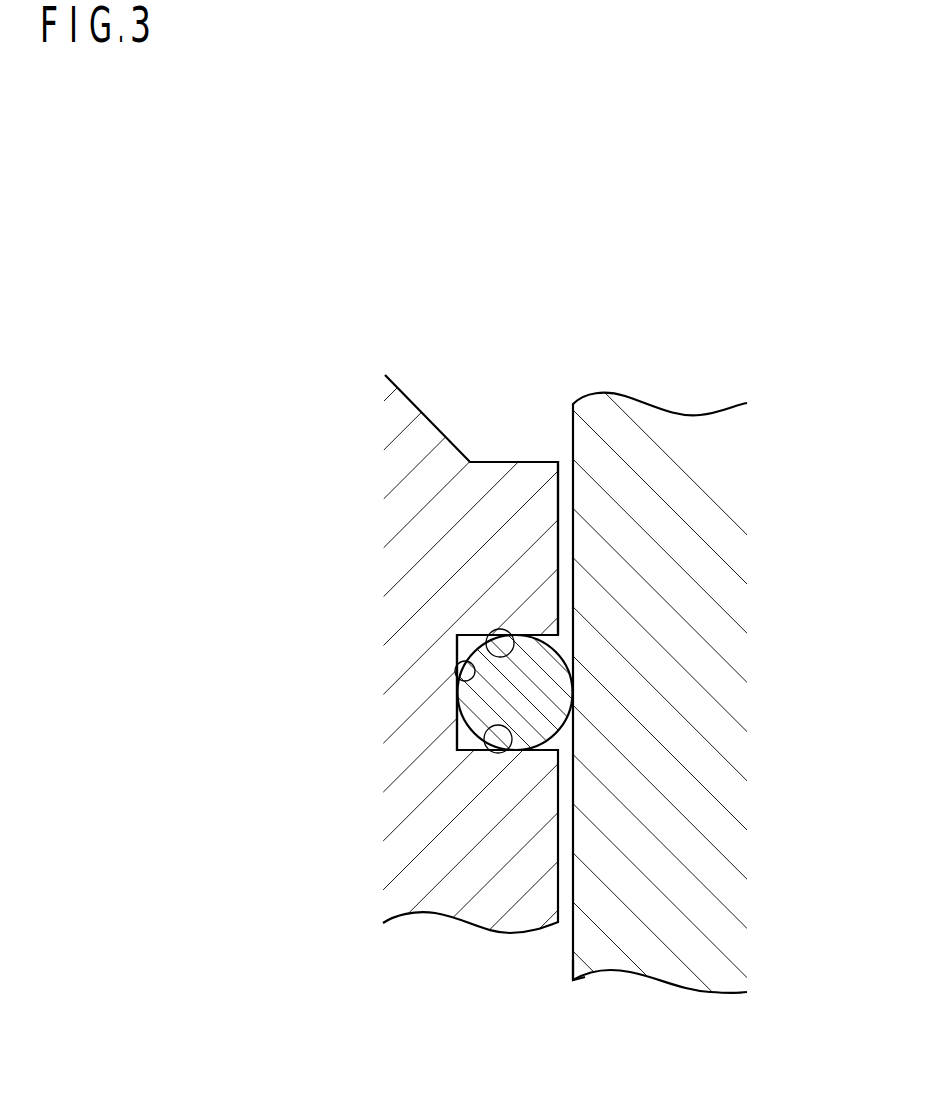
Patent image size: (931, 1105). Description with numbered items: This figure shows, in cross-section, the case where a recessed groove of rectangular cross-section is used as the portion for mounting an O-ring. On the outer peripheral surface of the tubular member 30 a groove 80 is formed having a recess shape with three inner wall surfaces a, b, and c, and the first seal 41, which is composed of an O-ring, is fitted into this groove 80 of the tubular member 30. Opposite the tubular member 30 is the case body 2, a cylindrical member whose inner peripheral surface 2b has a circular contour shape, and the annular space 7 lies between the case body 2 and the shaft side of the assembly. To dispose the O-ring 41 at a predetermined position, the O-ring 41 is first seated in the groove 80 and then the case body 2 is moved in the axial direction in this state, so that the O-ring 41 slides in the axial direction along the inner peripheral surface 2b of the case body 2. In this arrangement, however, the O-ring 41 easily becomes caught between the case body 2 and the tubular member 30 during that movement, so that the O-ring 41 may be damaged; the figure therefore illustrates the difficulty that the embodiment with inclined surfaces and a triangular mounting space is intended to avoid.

The annular space 7 is at (502, 400).
The tubular member 30 is at (477, 817).
The first seal 41 is at (490, 706).
The groove 80 is at (460, 690).
The case body 2 is at (650, 797).
The inner peripheral surface 2b is at (573, 961).
The inner wall surface a is at (482, 695).
The inner wall surface b is at (508, 655).
The inner wall surface c is at (512, 745).